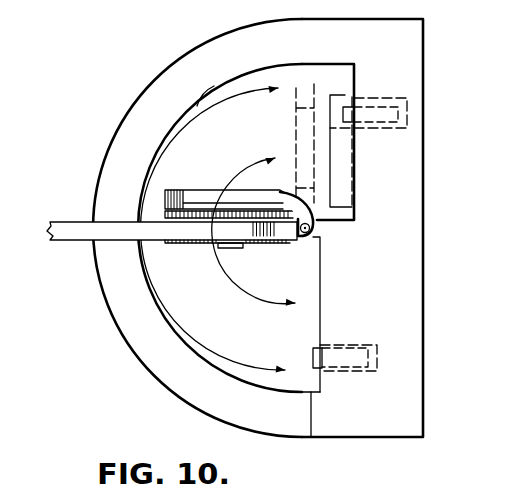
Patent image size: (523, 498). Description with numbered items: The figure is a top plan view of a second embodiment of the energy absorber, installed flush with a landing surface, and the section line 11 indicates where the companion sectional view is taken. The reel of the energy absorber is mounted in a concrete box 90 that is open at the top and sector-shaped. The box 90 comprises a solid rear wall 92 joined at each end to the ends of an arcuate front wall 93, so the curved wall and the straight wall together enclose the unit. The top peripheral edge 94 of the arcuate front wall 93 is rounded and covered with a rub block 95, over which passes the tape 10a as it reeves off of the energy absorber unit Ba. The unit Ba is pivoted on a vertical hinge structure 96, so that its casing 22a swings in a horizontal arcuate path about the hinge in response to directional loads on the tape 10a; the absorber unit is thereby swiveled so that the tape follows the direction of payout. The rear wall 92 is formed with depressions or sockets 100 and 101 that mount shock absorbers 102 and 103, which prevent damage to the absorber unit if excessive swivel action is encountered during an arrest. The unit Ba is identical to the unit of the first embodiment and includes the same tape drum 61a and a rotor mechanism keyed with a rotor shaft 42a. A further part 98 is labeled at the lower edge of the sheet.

The concrete box 90 is at (436, 8).
The rear wall 92 is at (383, 278).
The arcuate front wall 93 is at (212, 92).
The top peripheral edge 94 is at (322, 496).
The rub block 95 is at (157, 97).
The vertical hinge structure 96 is at (310, 229).
The base 98 is at (478, 497).
The socket 100 is at (406, 102).
The socket 101 is at (373, 347).
The shock absorber 102 is at (342, 108).
The shock absorber 103 is at (313, 357).
The tape 10a is at (70, 222).
The casing 22a is at (183, 195).
The rotor shaft 42a is at (245, 246).
The tape drum 61a is at (200, 244).
The energy absorber unit Ba is at (232, 180).
The section line 11- 11 is at (58, 268).